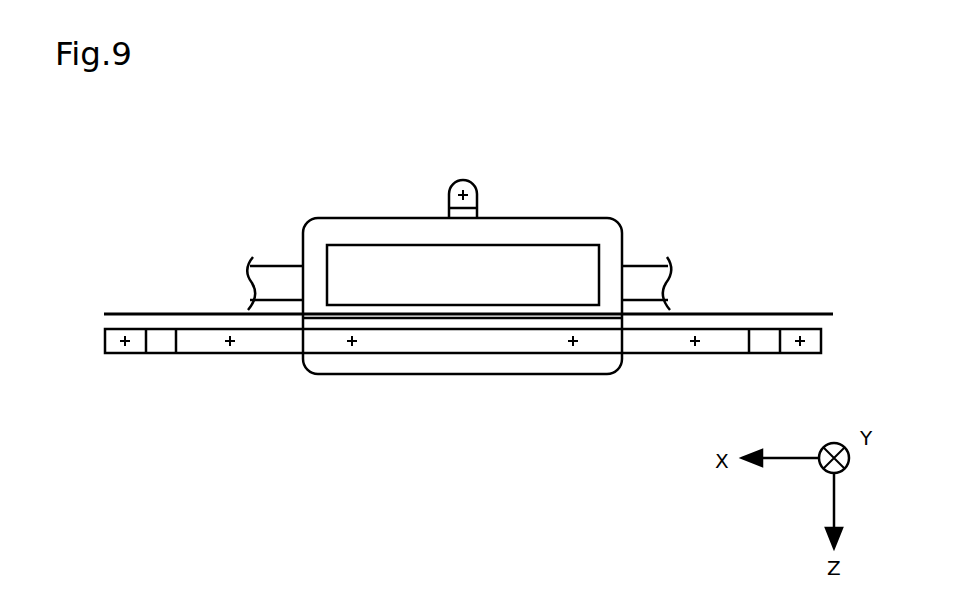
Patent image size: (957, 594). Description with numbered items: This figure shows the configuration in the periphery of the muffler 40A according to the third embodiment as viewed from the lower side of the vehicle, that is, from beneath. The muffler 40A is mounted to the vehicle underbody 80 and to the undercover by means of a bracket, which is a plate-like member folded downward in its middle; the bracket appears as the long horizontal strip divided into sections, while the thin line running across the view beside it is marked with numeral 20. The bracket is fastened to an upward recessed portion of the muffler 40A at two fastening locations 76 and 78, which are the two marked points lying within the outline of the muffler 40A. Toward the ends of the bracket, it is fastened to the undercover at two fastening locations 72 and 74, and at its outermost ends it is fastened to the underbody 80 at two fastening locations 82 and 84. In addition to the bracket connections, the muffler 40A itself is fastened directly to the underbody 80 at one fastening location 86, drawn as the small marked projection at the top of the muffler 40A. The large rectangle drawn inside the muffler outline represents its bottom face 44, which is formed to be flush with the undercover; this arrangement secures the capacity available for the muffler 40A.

The plate 20 is at (760, 313).
The muffler 40A is at (603, 228).
The bottom face 44 is at (557, 254).
The fastening location 72 is at (231, 344).
The fastening location 74 is at (696, 344).
The fastening location 76 is at (353, 344).
The fastening location 78 is at (574, 344).
The underbody 80 is at (762, 355).
The fastening location 82 is at (126, 344).
The fastening location 84 is at (801, 344).
The fastening location 86 is at (461, 183).